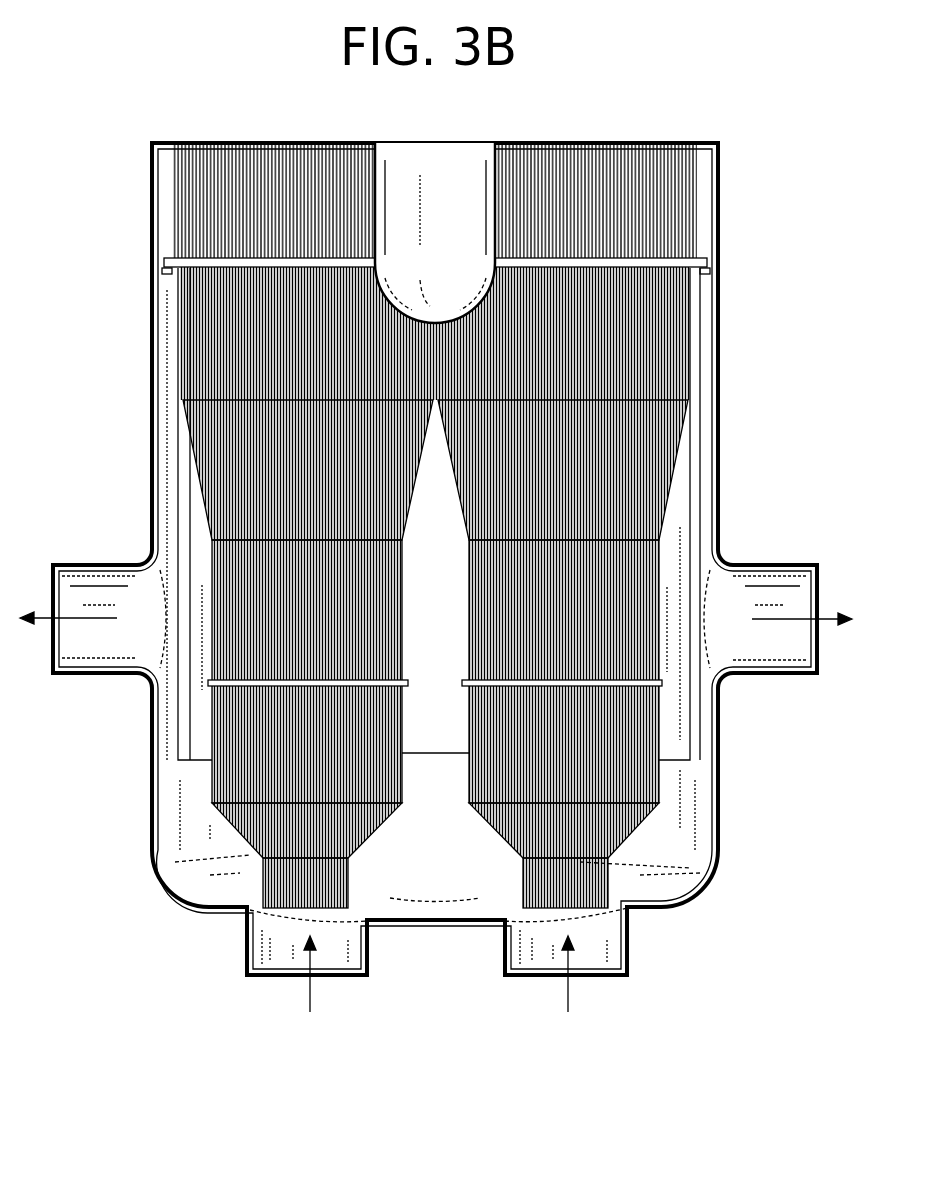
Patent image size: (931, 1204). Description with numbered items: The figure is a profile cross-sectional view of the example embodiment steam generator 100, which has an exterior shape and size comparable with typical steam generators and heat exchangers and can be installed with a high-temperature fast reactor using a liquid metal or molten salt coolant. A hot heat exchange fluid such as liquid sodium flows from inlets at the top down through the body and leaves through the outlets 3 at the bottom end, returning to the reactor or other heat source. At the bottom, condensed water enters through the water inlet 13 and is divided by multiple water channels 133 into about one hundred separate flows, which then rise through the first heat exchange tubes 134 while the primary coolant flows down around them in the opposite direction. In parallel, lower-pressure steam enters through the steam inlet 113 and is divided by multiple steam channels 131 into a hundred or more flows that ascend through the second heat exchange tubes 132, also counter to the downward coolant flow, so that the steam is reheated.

The steam generator 100 is at (740, 975).
The outlet 3 is at (760, 650).
The water inlet 13 is at (540, 958).
The steam inlet 113 is at (285, 958).
The steam channel 131 is at (240, 343).
The second heat exchange tube 132 is at (197, 176).
The water channel 133 is at (648, 473).
The first heat exchange tube 134 is at (645, 218).